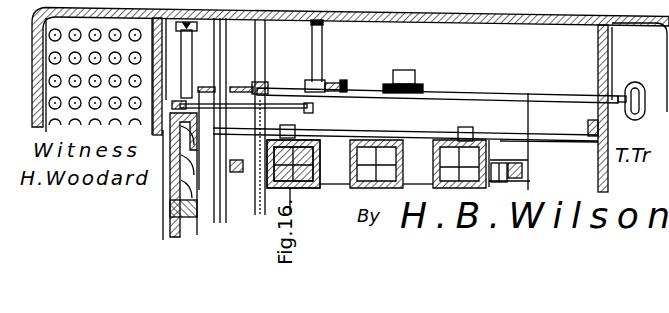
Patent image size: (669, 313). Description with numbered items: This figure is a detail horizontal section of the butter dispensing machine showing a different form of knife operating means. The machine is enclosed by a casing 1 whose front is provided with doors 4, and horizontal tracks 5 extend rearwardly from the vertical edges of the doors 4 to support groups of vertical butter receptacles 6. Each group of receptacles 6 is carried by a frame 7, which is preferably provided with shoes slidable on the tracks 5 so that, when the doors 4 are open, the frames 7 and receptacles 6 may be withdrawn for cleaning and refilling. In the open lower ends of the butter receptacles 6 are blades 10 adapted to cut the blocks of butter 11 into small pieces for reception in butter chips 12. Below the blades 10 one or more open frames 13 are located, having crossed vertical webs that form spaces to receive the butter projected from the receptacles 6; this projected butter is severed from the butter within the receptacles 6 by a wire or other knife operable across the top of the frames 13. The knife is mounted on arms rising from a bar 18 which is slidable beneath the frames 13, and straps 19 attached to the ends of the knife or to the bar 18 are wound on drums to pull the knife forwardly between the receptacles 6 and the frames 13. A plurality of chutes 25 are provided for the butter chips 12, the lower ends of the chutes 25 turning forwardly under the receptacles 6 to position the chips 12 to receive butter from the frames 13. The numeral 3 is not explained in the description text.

The casing 1 is at (478, 28).
The frame 3 is at (420, 137).
The doors 4 is at (597, 175).
The horizontal tracks 5 is at (553, 145).
The butter receptacles 6 is at (383, 128).
The frame 7 is at (417, 125).
The blades 10 is at (322, 190).
The blocks of butter 11 is at (254, 84).
The butter chips 12 is at (186, 186).
The open frames 13 is at (398, 125).
The bar 18 is at (266, 82).
The straps 19 is at (470, 126).
The chutes 25 is at (200, 187).